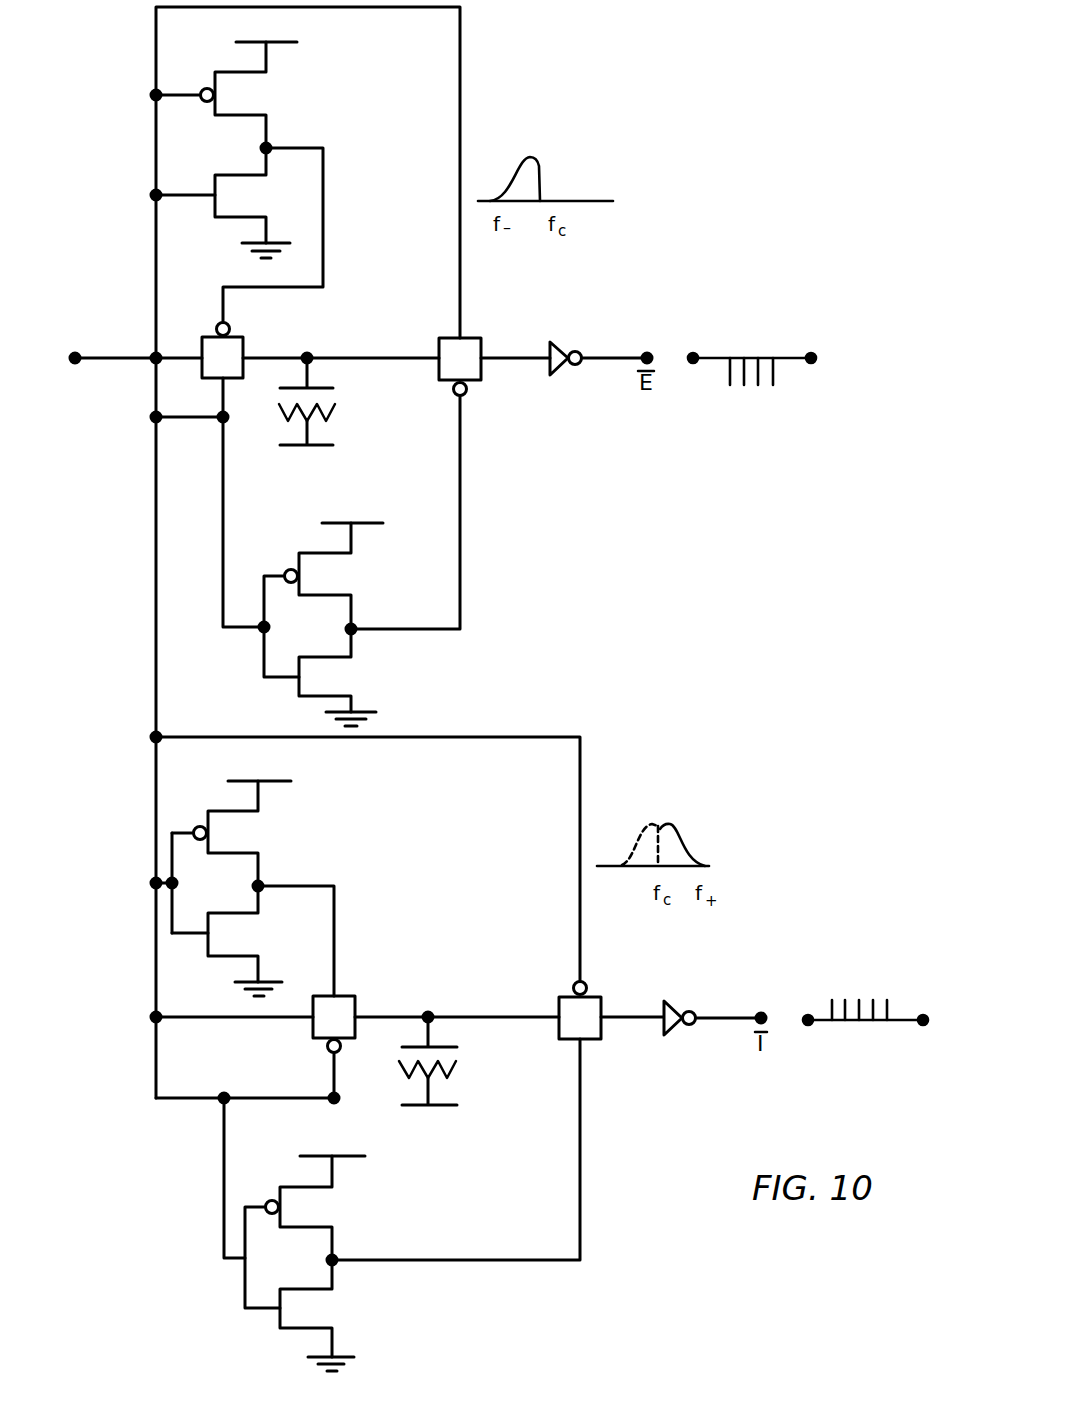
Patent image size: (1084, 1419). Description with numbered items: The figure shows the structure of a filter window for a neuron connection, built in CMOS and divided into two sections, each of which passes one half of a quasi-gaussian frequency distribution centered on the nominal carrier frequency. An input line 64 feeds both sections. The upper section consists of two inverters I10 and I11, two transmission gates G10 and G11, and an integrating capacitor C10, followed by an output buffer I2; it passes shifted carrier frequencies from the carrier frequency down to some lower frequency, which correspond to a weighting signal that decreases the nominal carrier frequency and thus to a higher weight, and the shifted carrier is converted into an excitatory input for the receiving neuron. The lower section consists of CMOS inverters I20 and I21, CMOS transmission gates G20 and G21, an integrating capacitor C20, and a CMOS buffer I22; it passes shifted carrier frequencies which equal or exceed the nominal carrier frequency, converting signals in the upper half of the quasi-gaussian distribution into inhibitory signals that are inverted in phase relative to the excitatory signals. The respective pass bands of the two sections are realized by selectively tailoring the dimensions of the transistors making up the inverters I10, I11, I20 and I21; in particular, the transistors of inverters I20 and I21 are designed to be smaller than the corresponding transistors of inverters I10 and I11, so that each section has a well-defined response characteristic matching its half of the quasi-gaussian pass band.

The input line 64 is at (77, 354).
The inverter I10 is at (275, 95).
The transmission gate G10 is at (243, 337).
The integrating capacitor C10 is at (333, 388).
The transmission gate G11 is at (468, 338).
The inverter I2 is at (563, 373).
The inverter I11 is at (360, 577).
The CMOS inverter I20 is at (270, 835).
The CMOS transmission gate G20 is at (343, 996).
The integrating capacitor C20 is at (455, 1046).
The CMOS transmission gate G21 is at (593, 997).
The CMOS buffer I22 is at (672, 1036).
The CMOS inverter I21 is at (342, 1209).